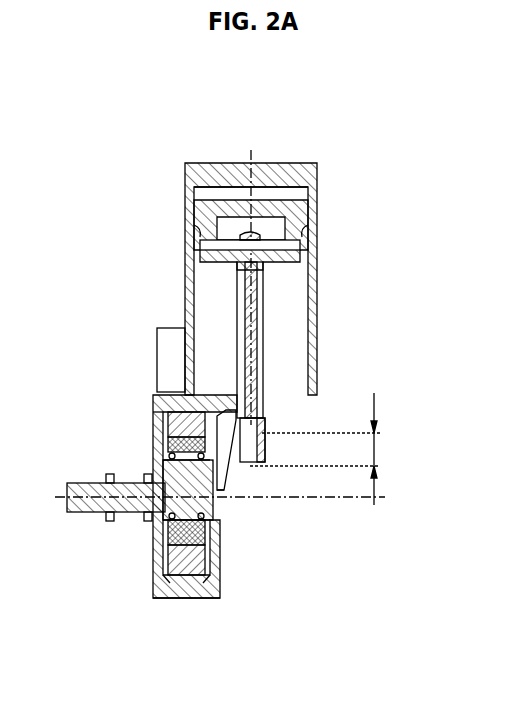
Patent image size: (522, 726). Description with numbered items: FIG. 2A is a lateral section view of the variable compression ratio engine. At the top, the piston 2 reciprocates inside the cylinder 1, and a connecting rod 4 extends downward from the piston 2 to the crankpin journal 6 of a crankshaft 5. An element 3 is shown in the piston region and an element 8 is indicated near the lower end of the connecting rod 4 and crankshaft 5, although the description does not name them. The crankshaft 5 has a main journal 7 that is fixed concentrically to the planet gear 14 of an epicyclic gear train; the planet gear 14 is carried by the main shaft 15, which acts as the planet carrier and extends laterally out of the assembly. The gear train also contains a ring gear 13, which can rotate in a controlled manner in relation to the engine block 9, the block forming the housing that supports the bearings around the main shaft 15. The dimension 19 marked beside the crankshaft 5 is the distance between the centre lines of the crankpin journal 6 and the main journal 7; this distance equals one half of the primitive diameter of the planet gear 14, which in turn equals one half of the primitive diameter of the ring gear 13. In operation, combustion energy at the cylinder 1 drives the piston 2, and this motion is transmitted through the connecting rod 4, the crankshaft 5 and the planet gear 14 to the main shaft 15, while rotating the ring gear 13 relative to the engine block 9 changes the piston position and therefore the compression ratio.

The cylinder 1 is at (278, 172).
The piston 2 is at (297, 207).
The valve 3 is at (280, 240).
The connecting rod 4 is at (266, 388).
The crankshaft 5 is at (225, 450).
The crankpin journal 6 is at (252, 442).
The main journal 7 is at (205, 472).
The lever end 8 is at (233, 478).
The engine block 9 is at (190, 598).
The ring gear 13 is at (185, 518).
The planet gear 14 is at (170, 447).
The main shaft 15 is at (80, 505).
The distance between the centre lines of the crankpin journal and the main journal 19 is at (335, 449).